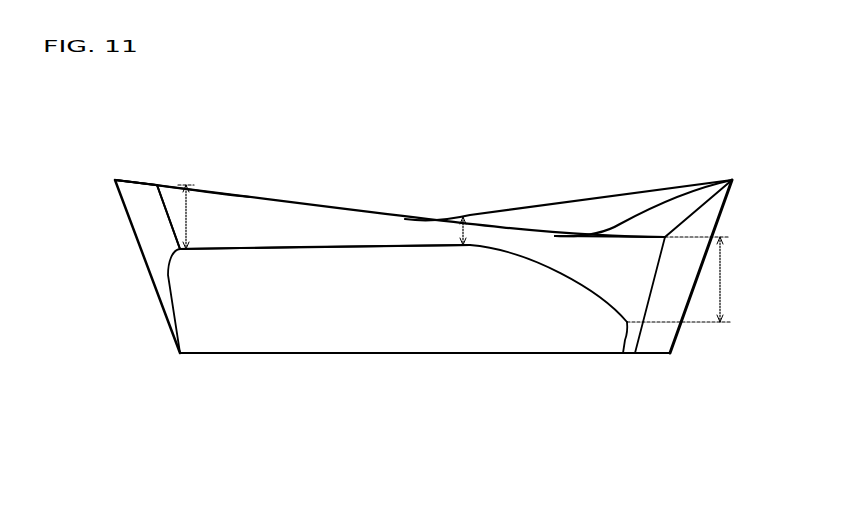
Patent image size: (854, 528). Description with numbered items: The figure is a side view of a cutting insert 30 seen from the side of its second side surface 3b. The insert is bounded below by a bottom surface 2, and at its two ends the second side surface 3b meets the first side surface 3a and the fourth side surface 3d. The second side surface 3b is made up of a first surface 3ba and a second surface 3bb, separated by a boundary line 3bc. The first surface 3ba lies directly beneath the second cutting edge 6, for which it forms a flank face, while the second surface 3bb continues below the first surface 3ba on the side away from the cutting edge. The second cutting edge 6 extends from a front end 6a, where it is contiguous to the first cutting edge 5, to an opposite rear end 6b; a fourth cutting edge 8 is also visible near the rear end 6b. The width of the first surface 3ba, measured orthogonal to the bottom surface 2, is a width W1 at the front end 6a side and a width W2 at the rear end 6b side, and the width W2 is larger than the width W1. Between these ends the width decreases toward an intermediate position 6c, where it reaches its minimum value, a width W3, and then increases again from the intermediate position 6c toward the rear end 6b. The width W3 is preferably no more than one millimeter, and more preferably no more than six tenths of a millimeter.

The bottom surface 2 is at (478, 353).
The first side surface 3a is at (155, 243).
The second side surface 3b is at (297, 447).
The first surface 3ba is at (285, 232).
The second surface 3bb is at (352, 323).
The boundary line 3bc is at (397, 247).
The fourth side surface 3d is at (657, 337).
The first cutting edge 5 is at (148, 182).
The second cutting edge 6 is at (297, 205).
The front end 6a is at (156, 185).
The rear end 6b is at (665, 236).
The intermediate position 6c is at (466, 215).
The fourth cutting edge 8 is at (697, 193).
The cutting insert 30 is at (200, 373).
The width W1 is at (198, 217).
The width W2 is at (690, 279).
The width W3 is at (455, 237).